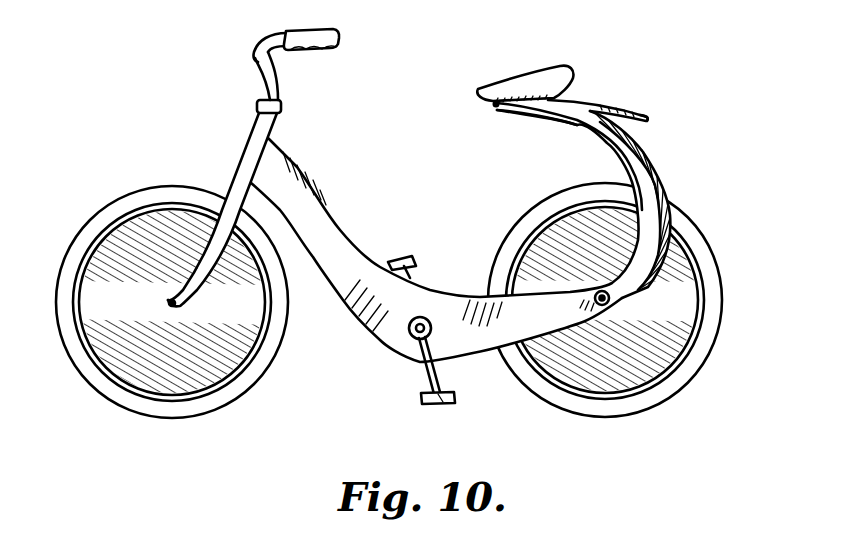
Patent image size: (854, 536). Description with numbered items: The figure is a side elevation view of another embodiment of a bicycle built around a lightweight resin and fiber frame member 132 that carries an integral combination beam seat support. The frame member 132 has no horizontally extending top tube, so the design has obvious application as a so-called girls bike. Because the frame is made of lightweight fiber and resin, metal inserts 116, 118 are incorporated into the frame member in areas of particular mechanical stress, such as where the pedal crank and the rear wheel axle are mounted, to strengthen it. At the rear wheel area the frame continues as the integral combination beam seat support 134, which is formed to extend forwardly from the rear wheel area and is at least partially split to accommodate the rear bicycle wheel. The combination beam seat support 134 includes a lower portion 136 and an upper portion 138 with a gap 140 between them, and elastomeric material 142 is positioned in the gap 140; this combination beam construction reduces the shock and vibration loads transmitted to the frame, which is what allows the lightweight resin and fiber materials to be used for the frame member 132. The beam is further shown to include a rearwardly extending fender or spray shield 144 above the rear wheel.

The metal insert 116 is at (410, 334).
The metal insert 118 is at (613, 298).
The frame member 132 is at (338, 228).
The integral combination beam seat support 134 is at (540, 128).
The lower portion 136 is at (578, 133).
The upper portion 138 is at (658, 160).
The gap 140 is at (493, 103).
The elastomeric material 142 is at (556, 98).
The fender or spray shield 144 is at (650, 117).